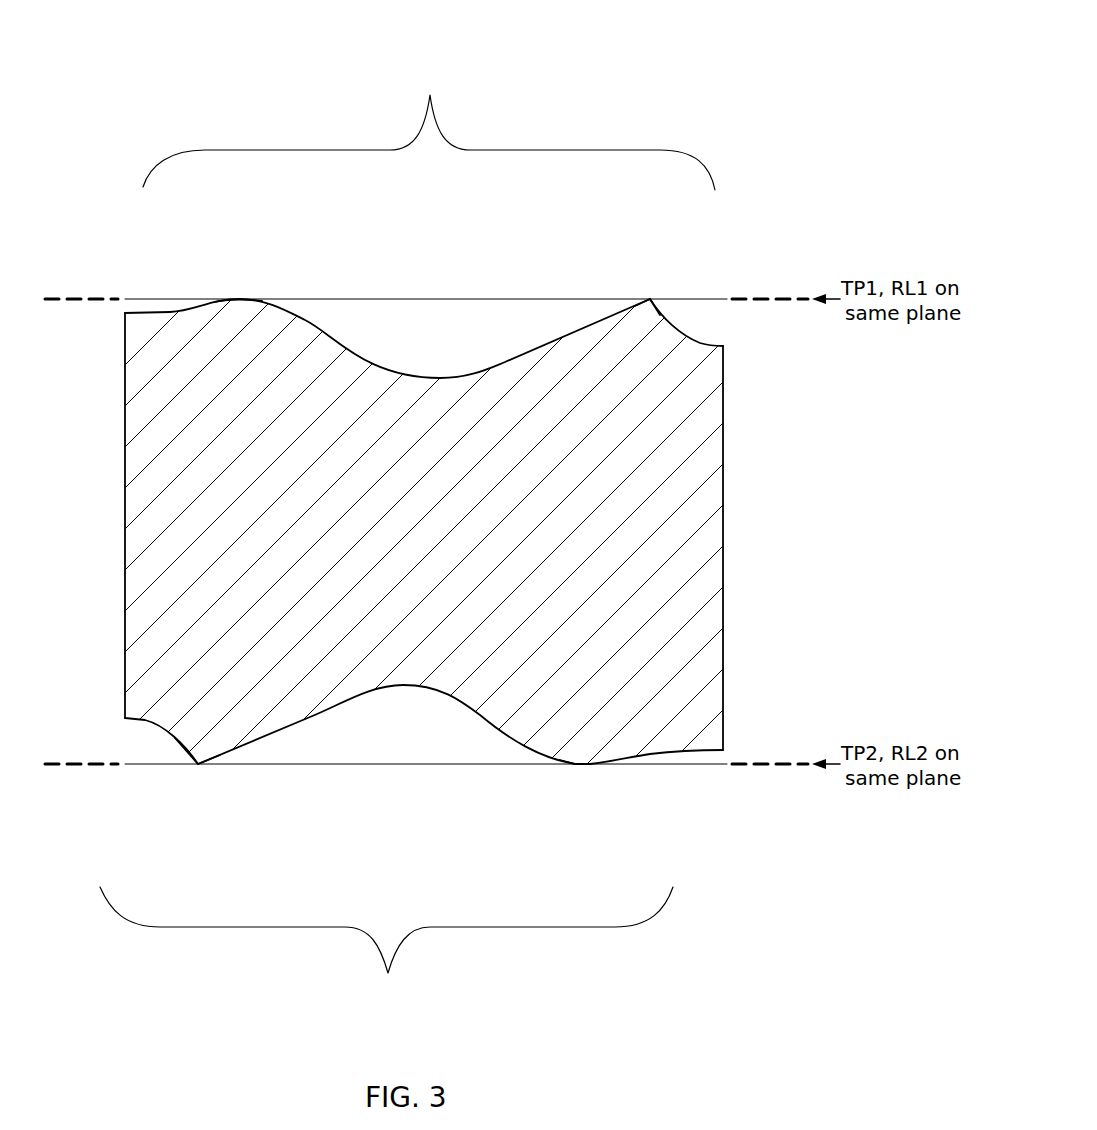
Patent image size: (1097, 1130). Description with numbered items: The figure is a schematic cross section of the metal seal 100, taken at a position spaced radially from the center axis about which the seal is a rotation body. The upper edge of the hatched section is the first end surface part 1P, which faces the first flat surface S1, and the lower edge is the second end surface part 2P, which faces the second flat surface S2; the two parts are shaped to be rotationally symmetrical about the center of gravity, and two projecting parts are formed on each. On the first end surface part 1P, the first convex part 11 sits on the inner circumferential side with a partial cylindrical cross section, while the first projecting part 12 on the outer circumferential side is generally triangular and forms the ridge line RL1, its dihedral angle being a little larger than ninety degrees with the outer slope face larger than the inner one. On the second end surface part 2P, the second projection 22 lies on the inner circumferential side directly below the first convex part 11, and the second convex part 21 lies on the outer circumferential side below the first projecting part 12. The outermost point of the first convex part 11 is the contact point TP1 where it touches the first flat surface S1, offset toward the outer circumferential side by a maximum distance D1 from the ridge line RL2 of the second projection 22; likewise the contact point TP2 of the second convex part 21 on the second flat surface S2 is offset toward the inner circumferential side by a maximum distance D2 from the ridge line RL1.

The metal seal 100 is at (432, 501).
The first end surface part 1P is at (424, 219).
The first convex part 11 is at (286, 282).
The first projecting part 12 is at (616, 294).
The contact point TP1 is at (245, 298).
The ridge line RL1 is at (650, 298).
The first flat surface S1 is at (424, 267).
The maximum distance D1 is at (82, 797).
The maximum distance D2 is at (772, 797).
The second end surface part 2P is at (411, 844).
The second convex part 21 is at (571, 788).
The second projection 22 is at (275, 760).
The contact point TP2 is at (600, 767).
The ridge line RL2 is at (198, 770).
The second flat surface S2 is at (424, 799).